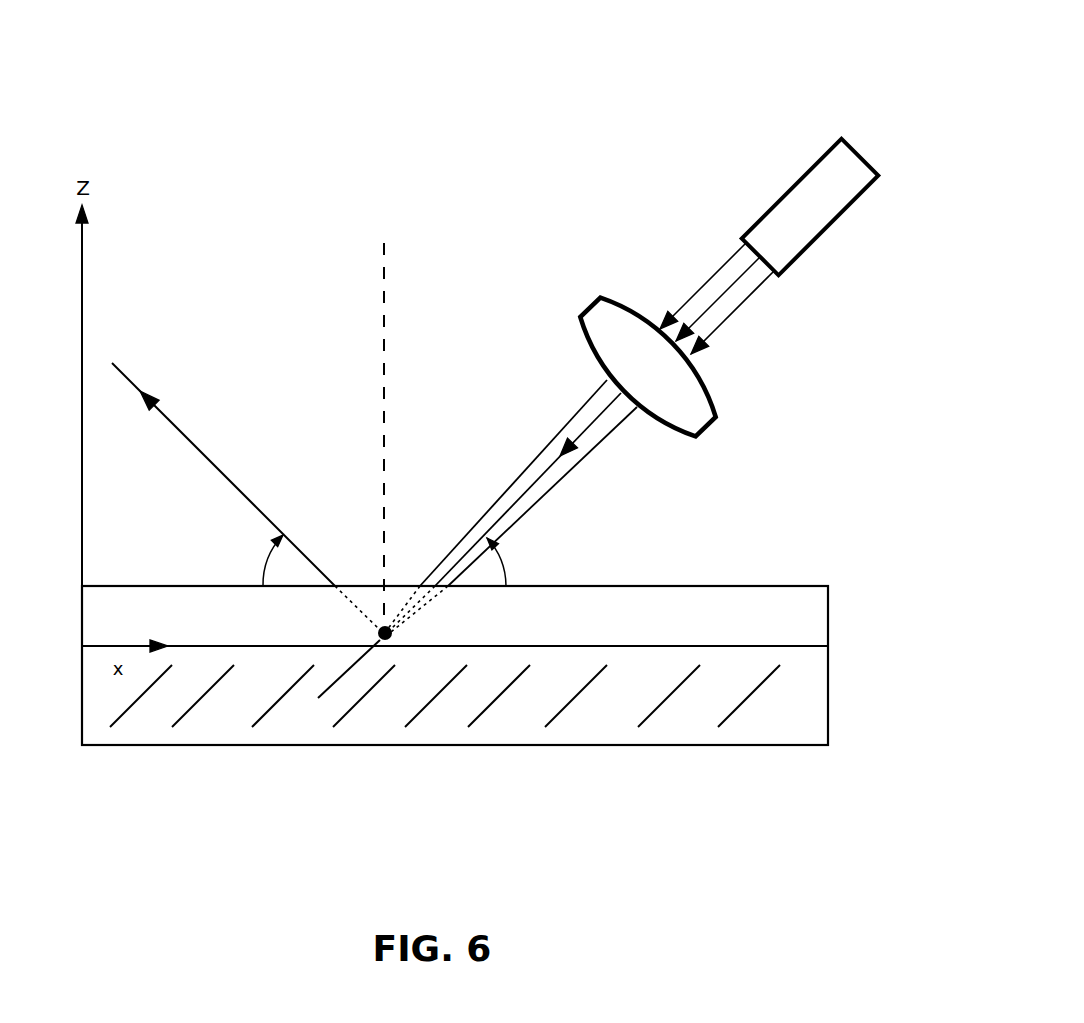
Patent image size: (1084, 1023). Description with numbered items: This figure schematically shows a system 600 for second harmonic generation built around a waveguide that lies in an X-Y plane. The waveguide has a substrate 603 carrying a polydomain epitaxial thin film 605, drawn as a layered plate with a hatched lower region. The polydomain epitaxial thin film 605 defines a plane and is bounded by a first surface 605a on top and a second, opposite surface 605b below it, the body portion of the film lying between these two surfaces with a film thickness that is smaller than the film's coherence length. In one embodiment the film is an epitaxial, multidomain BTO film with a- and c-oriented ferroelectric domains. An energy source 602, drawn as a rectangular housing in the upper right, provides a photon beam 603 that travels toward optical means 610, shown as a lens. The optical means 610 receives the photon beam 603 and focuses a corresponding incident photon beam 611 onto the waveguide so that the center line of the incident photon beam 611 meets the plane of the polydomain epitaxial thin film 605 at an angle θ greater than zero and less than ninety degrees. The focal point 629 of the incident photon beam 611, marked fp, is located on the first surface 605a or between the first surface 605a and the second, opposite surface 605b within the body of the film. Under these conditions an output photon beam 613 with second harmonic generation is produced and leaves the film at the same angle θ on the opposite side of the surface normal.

The system for second harmonic generation 600 is at (387, 105).
The energy source 602 is at (800, 178).
The substrate / photon beam 603 is at (717, 295).
The polydomain epitaxial thin film 605 is at (828, 597).
The first surface 605a is at (740, 585).
The second, opposite surface 605b is at (778, 646).
The optical means 610 is at (596, 300).
The incident photon beam 611 is at (605, 405).
The output photon beam 613 is at (195, 445).
The focal point 629 is at (381, 639).